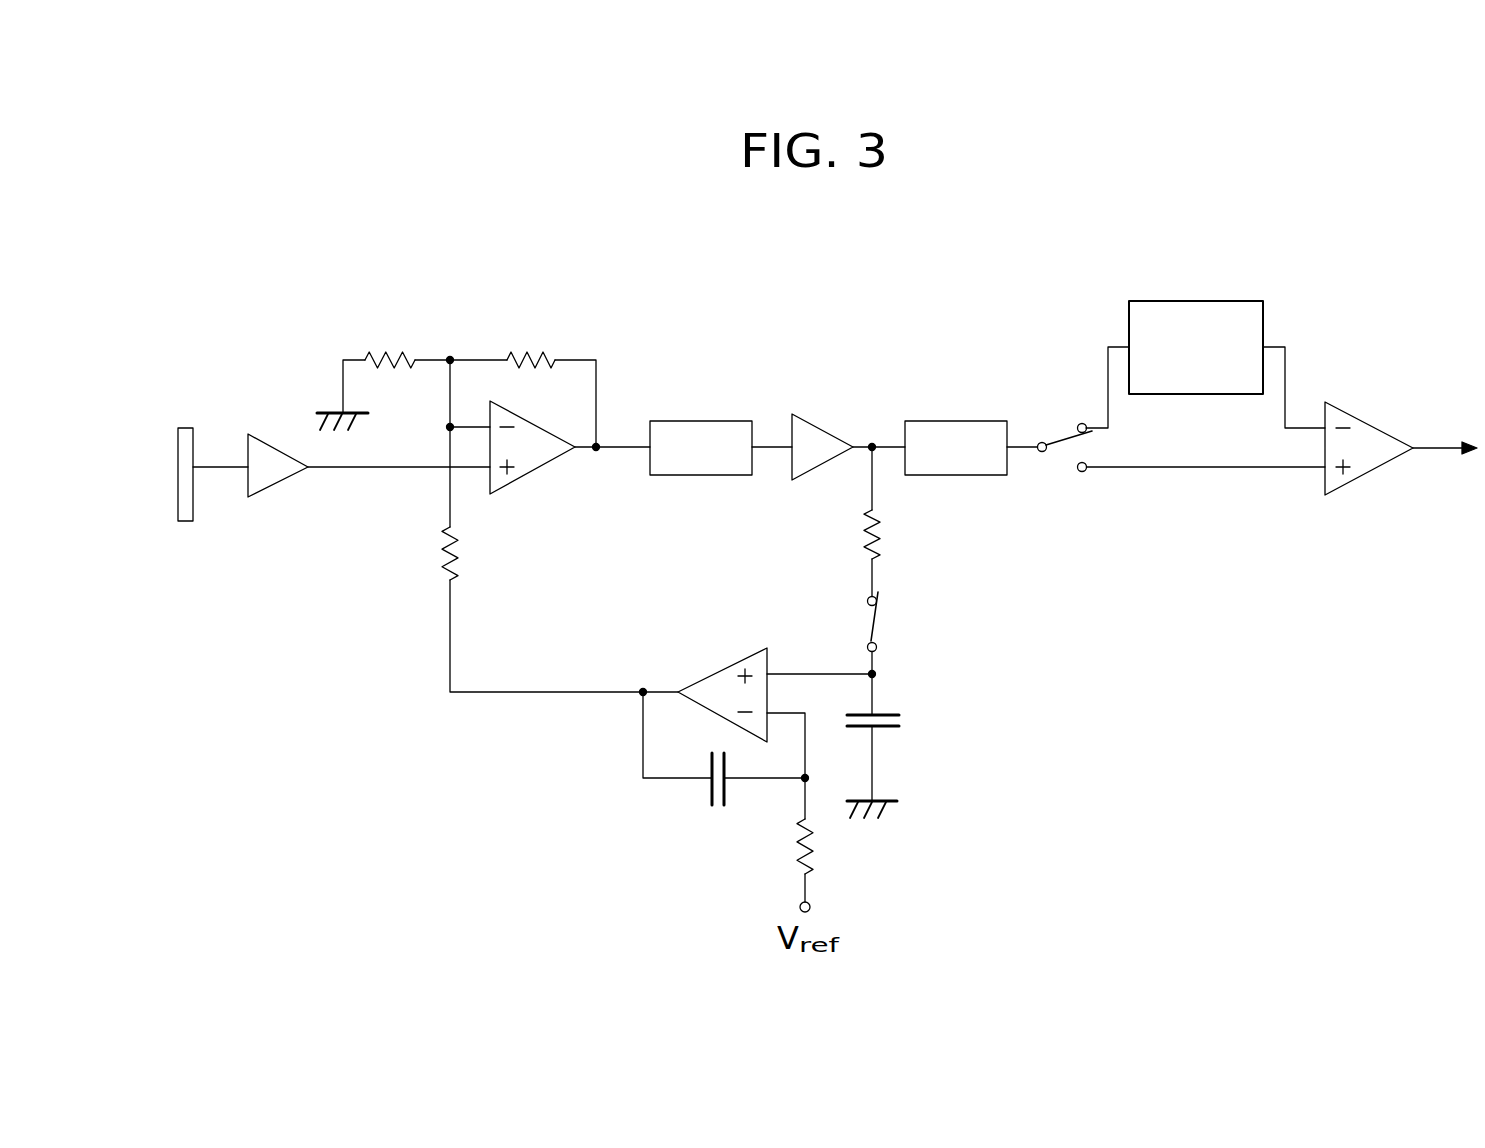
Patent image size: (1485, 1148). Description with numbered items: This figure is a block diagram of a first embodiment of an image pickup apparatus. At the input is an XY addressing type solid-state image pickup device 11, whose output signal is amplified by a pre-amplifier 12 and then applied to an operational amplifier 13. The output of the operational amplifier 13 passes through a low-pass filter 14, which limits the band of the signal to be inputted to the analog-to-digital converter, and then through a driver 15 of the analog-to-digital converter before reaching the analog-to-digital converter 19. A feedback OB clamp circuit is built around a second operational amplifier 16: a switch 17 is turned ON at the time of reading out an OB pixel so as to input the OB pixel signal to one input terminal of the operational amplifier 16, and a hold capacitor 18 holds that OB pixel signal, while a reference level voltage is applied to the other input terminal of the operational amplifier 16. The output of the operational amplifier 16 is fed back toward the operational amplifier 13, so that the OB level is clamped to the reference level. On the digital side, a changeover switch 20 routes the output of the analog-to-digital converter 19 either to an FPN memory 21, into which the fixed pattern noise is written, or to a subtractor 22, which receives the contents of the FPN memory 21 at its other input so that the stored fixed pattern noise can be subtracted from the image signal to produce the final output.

The XY addressing type solid-state image pickup device 11 is at (188, 427).
The pre-amplifier 12 is at (265, 436).
The operational amplifier 13 is at (523, 482).
The low-pass filter 14 is at (712, 420).
The driver of analog-to-digital converter 15 is at (813, 422).
The operational amplifier of feedback OB clamp circuit 16 is at (724, 667).
The switch 17 is at (890, 620).
The hold capacitor 18 is at (905, 716).
The analog-to-digital converter 19 is at (958, 420).
The changeover switch 20 is at (1061, 430).
The FPN memory 21 is at (1198, 300).
The subtractor 22 is at (1350, 412).